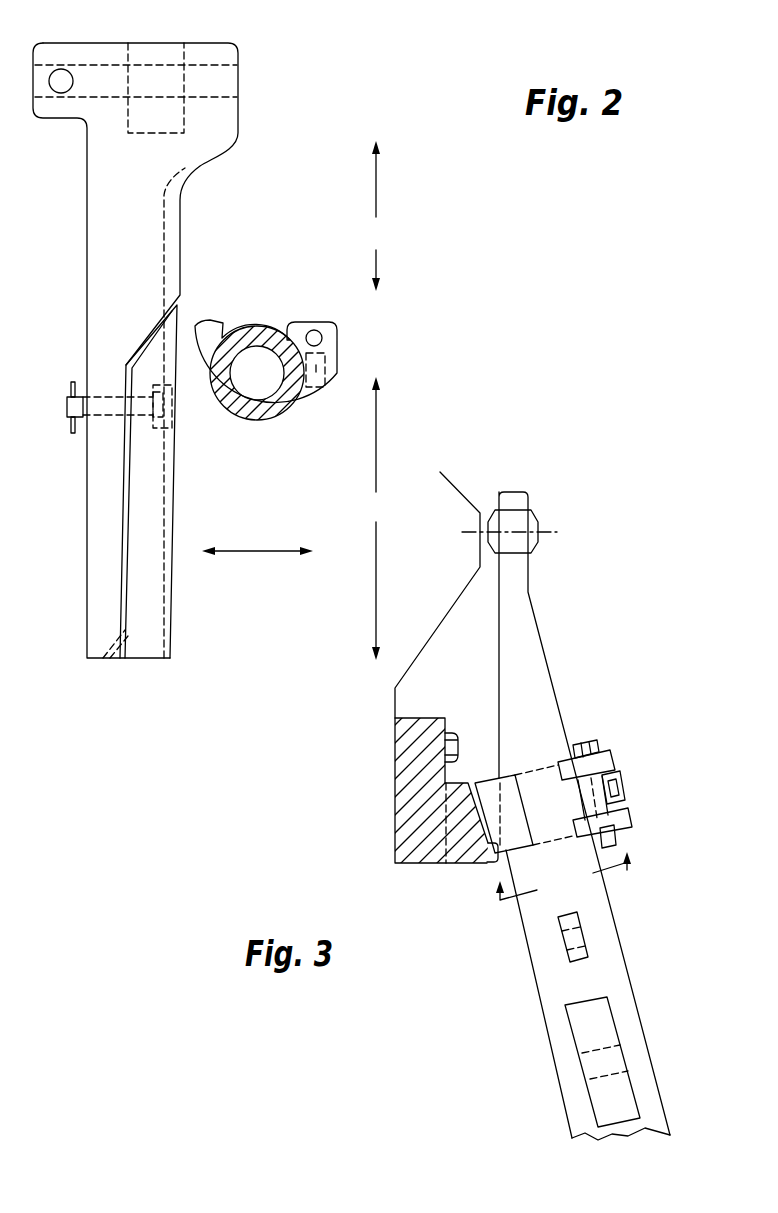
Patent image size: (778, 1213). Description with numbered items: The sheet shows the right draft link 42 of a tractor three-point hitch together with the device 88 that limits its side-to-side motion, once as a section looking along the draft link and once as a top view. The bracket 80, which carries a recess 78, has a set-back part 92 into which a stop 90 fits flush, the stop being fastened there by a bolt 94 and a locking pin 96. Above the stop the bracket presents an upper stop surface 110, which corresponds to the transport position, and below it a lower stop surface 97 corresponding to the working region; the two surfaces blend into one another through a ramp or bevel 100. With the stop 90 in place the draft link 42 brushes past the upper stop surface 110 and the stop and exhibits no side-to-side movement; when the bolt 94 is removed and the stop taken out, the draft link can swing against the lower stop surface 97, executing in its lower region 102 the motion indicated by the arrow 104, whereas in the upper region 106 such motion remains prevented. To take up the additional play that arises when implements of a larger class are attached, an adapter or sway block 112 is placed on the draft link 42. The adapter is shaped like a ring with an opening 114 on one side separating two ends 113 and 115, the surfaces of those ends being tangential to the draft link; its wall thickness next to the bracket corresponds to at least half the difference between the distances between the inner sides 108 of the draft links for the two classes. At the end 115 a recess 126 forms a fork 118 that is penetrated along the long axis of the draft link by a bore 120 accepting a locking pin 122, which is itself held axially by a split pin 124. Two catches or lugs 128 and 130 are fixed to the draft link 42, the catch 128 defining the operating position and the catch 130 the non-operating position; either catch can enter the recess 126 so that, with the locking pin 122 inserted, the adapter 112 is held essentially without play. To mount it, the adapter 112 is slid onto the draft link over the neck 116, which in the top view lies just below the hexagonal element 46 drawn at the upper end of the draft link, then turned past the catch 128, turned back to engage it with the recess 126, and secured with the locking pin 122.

In FIG. 2, the draft link 42 is at (258, 412).
In FIG. 3, the draft link 42 is at (628, 980).
In FIG. 3, the nut 46 is at (536, 520).
In FIG. 2, the recess 78 is at (148, 57).
In FIG. 2, the bracket 80 is at (93, 613).
In FIG. 2, the device 88 is at (277, 219).
In FIG. 2, the stop 90 is at (143, 600).
In FIG. 2, the set-back part 92 is at (100, 517).
In FIG. 2, the bolt 94 is at (67, 406).
In FIG. 2, the locking pin 96 is at (73, 382).
In FIG. 2, the lower stop surface 97 is at (138, 486).
In FIG. 2, the ramp or bevel 100 is at (151, 300).
In FIG. 2, the lower region 102 is at (378, 518).
In FIG. 2, the arrow 104 is at (257, 542).
In FIG. 2, the upper region 106 is at (382, 216).
In FIG. 2, the inner sides 108 is at (216, 405).
In FIG. 2, the upper stop surface 110 is at (188, 212).
In FIG. 3, the upper stop surface 110 is at (497, 863).
In FIG. 2, the adapter or sway block 112 is at (298, 441).
In FIG. 2, the end 113 is at (213, 320).
In FIG. 2, the opening 114 is at (238, 311).
In FIG. 3, the opening 114 is at (525, 782).
In FIG. 2, the end 115 is at (310, 322).
In FIG. 3, the neck 116 is at (522, 575).
In FIG. 3, the fork 118 is at (612, 752).
In FIG. 2, the bore 120 is at (316, 330).
In FIG. 3, the bore 120 is at (612, 760).
In FIG. 2, the locking pin 122 is at (324, 340).
In FIG. 3, the locking pin 122 is at (587, 740).
In FIG. 3, the split pin 124 is at (613, 848).
In FIG. 2, the recess 126 is at (327, 366).
In FIG. 3, the recess 126 is at (617, 787).
In FIG. 3, the catch 128 is at (587, 795).
In FIG. 3, the catch 130 is at (567, 945).